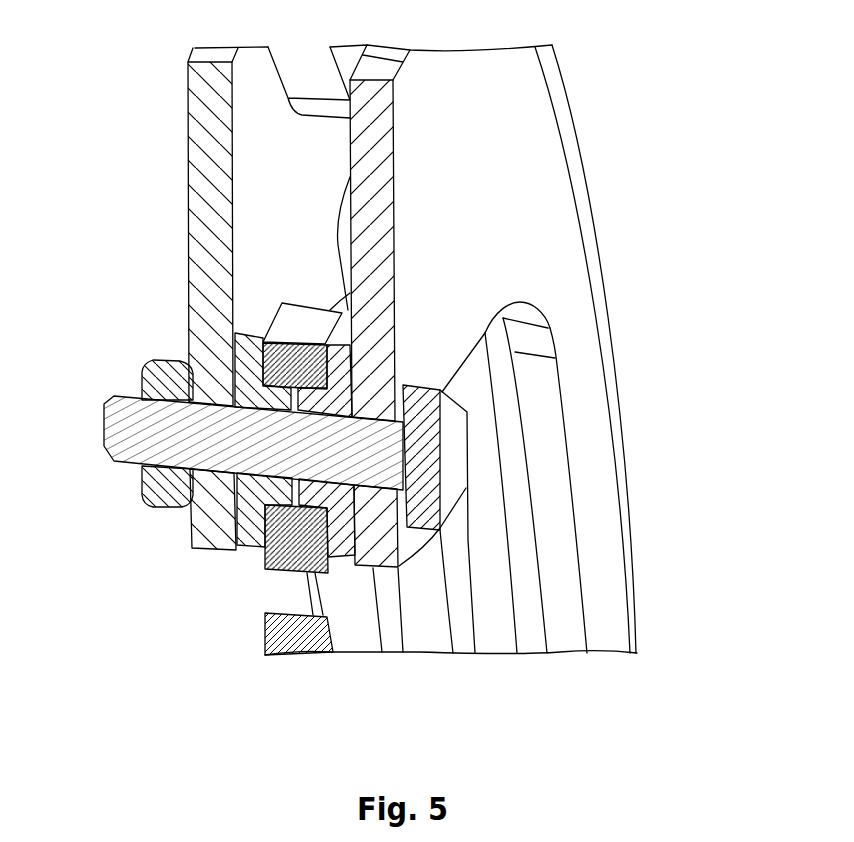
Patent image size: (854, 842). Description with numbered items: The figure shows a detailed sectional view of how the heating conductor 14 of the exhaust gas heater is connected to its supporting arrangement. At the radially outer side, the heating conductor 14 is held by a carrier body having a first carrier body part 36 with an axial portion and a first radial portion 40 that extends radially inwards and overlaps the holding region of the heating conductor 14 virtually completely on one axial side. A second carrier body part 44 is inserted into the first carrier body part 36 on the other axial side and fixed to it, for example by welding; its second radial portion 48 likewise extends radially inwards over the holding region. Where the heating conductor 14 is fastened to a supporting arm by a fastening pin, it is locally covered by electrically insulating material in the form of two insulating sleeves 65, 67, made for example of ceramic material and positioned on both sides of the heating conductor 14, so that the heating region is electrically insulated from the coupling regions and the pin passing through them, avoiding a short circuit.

The heating conductor 14 is at (282, 302).
The first carrier body part 36 is at (573, 122).
The first radial portion 40 is at (512, 112).
The second carrier body part 44 is at (188, 62).
The second radial portion 48 is at (188, 108).
The insulating sleeve 65 is at (322, 500).
The insulating sleeve 67 is at (270, 503).